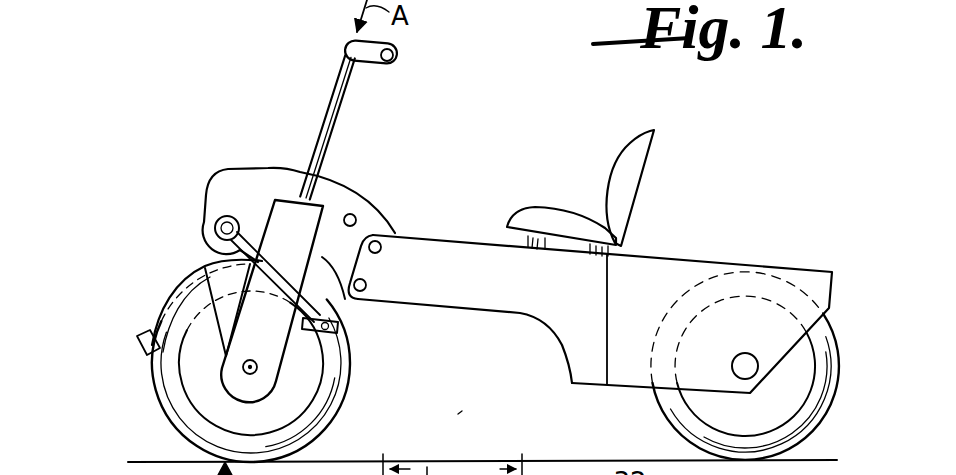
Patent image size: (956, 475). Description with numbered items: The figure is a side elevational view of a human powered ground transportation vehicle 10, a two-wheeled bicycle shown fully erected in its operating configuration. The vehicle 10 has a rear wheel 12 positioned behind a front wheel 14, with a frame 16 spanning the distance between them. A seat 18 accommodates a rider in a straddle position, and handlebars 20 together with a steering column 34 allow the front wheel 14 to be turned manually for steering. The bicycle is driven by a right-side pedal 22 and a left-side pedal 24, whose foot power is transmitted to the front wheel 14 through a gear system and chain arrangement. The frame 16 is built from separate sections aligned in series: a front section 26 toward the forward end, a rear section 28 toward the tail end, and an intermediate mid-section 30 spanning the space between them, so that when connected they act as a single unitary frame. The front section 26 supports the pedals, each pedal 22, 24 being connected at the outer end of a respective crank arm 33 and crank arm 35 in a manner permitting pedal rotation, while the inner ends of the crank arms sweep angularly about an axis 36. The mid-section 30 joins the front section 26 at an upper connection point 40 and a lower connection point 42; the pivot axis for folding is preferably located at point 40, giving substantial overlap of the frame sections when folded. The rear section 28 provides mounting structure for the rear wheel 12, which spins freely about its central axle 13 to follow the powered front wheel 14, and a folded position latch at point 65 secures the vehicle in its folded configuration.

The human powered ground transportation vehicle 10 is at (497, 96).
The rear wheel 12 is at (797, 412).
The central axle 13 is at (744, 352).
The front wheel 14 is at (198, 387).
The frame 16 is at (464, 382).
The seat 18 is at (556, 205).
The handlebars 20 is at (340, 46).
The right-side pedal 22 is at (146, 333).
The left-side pedal 24 is at (352, 335).
The front section 26 is at (282, 170).
The rear section 28 is at (702, 251).
The intermediate mid-section 30 is at (515, 320).
The right-side crank arm 33 is at (212, 255).
The steering column 34 is at (343, 131).
The left-side crank arm 35 is at (283, 276).
The axis 36 is at (217, 224).
The upper connection point 40 is at (382, 248).
The lower connection point 42 is at (388, 268).
The folded position latch point 65 is at (358, 218).